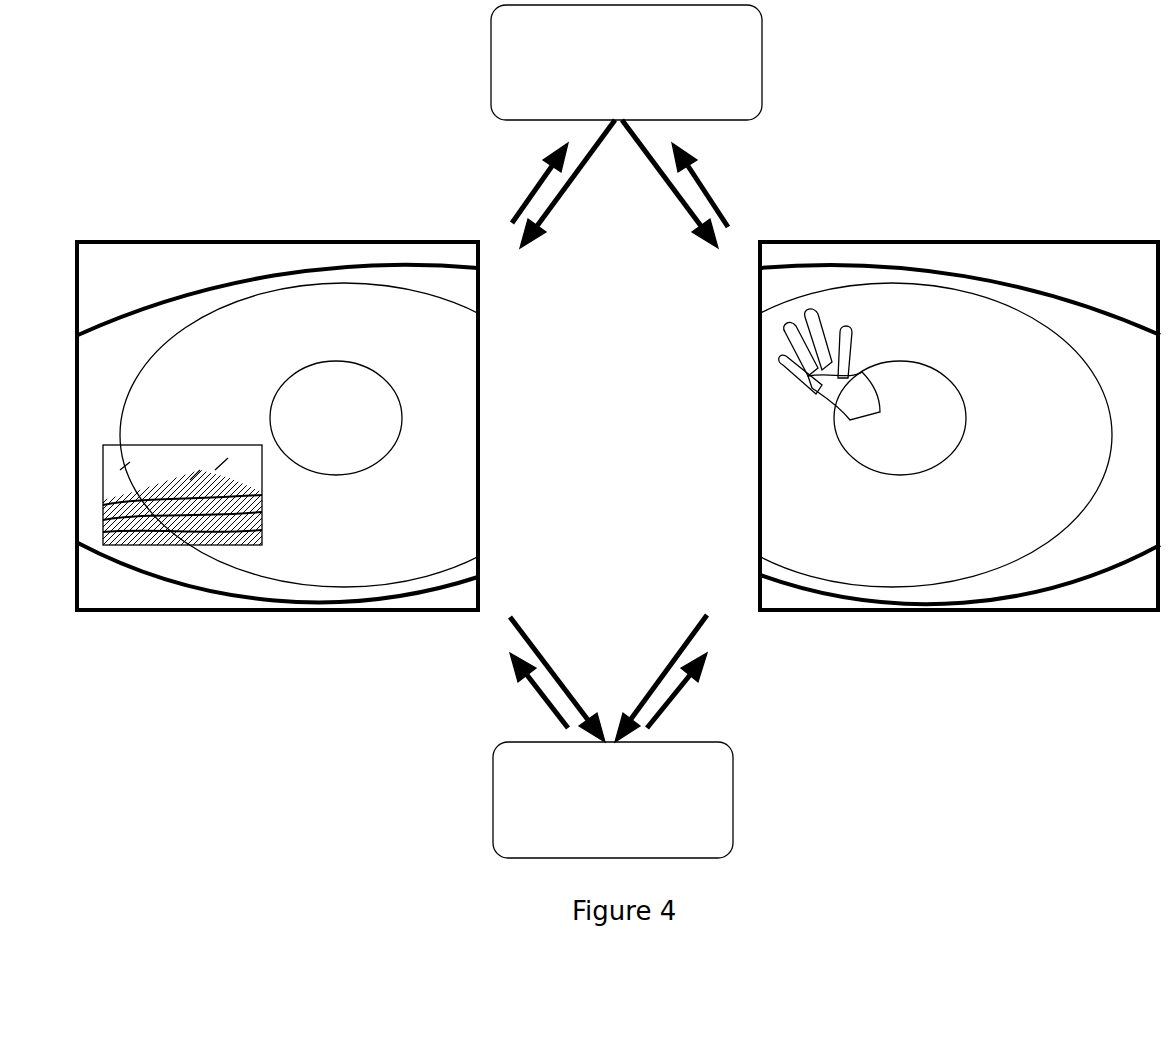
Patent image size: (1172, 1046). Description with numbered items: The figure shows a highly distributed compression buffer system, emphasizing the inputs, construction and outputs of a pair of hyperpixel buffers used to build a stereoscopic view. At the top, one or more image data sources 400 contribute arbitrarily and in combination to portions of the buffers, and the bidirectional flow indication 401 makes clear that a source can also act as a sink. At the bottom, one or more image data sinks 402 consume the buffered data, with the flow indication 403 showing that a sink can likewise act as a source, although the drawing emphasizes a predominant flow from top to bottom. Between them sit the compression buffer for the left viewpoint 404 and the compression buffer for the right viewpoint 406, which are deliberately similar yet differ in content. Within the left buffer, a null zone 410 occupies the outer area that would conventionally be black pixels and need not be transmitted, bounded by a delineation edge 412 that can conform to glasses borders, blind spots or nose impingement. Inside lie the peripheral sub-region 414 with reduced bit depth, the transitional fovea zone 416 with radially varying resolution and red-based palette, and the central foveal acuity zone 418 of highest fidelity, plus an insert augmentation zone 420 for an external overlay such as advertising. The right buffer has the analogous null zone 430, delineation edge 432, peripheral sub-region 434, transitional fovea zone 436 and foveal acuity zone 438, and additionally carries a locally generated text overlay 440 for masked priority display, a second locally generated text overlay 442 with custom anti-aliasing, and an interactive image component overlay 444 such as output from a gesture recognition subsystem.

The image data sources 400 is at (654, 62).
The source-to-sink bidirectional flow indication 401 is at (619, 184).
The image data sinks 402 is at (643, 800).
The sink-to-source bidirectional flow indication 403 is at (607, 678).
The compression buffer for left viewpoint 404 is at (322, 415).
The compression buffer for right viewpoint 406 is at (916, 415).
The null zone 410 is at (278, 432).
The delineation edge 412 is at (183, 307).
The peripheral sub-region 414 is at (102, 435).
The transitional fovea zone 416 is at (344, 435).
The foveal acuity zone 418 is at (336, 418).
The insert augmentation zone 420 is at (182, 495).
The null zone 430 is at (960, 433).
The delineation edge 432 is at (1057, 309).
The peripheral sub-region 434 is at (912, 435).
The transitional fovea zone 436 is at (976, 347).
The foveal acuity zone 438 is at (900, 418).
The locally generated text overlay 440 is at (1039, 441).
The locally generated text overlay 442 is at (1009, 522).
The interactive image component overlay 444 is at (888, 318).